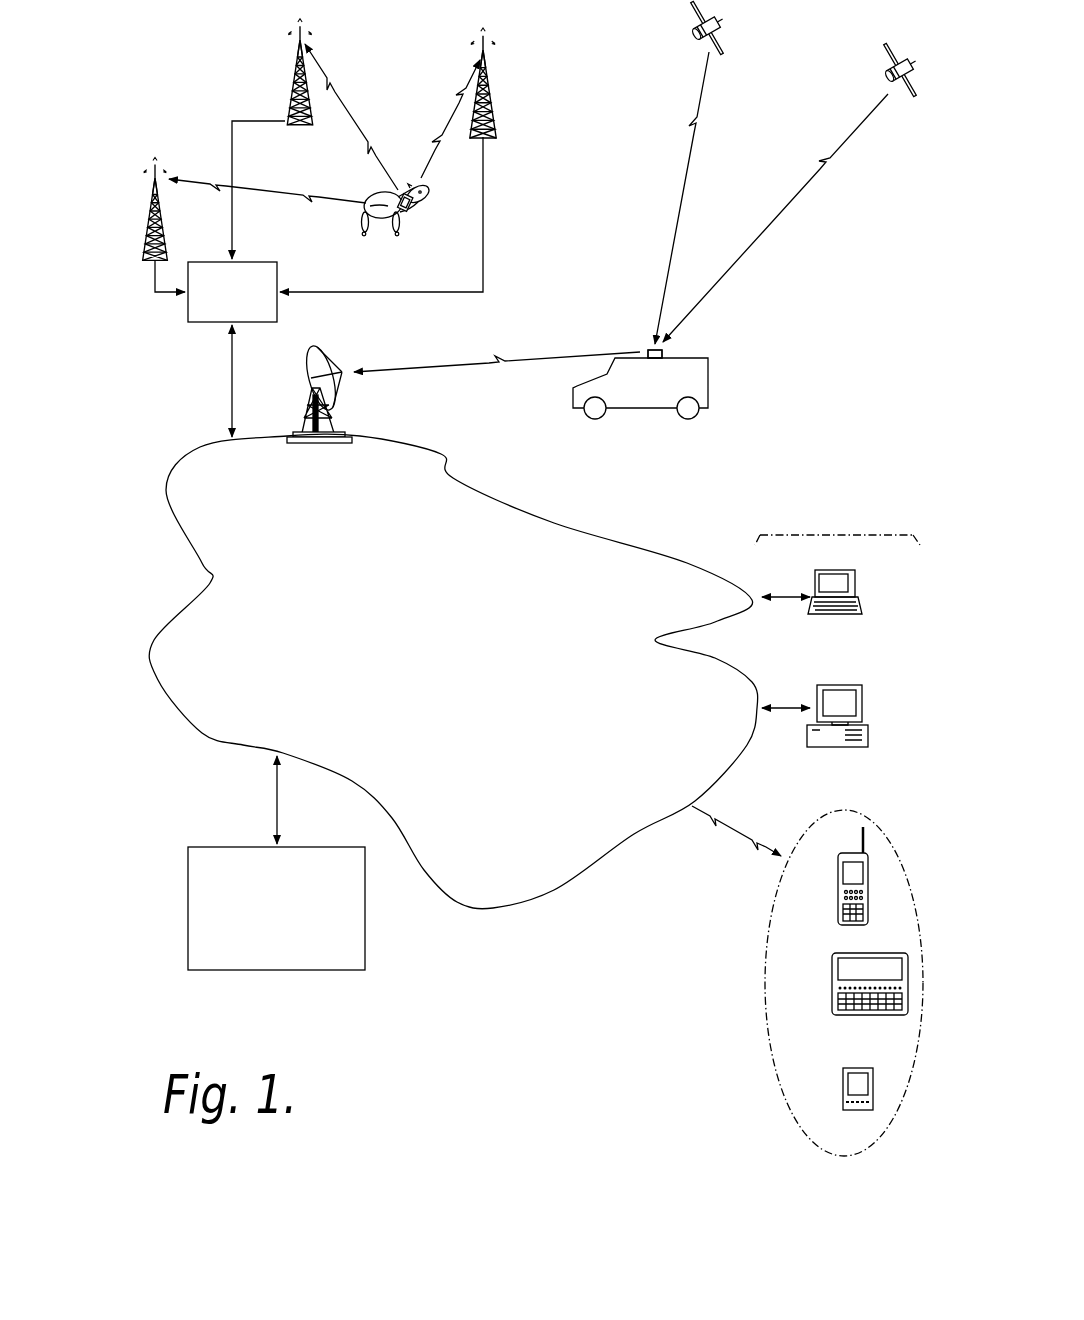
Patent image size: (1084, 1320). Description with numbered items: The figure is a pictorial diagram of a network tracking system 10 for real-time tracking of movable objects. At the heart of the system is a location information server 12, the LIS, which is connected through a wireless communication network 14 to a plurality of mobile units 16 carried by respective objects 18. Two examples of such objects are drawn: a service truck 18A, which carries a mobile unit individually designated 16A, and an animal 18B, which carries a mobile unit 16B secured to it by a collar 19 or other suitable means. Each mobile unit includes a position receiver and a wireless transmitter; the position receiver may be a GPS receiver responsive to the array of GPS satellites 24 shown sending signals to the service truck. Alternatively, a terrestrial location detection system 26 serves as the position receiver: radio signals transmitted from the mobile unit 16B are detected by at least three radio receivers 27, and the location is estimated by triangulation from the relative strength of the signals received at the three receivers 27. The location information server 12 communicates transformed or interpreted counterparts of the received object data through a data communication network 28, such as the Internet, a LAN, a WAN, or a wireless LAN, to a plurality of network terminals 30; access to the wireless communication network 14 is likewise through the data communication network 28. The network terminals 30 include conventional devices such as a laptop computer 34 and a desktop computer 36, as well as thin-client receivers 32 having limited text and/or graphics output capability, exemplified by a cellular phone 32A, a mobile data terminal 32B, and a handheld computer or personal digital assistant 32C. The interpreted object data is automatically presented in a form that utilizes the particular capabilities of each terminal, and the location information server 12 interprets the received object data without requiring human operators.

The network tracking system 10 is at (438, 1046).
The location information server 12 is at (276, 863).
The wireless communication network 14 is at (308, 357).
The mobile units 16 is at (421, 208).
The mobile unit on service truck 16A is at (663, 352).
The mobile unit on animal 16B is at (405, 214).
The objects 18 is at (671, 374).
The service truck 18A is at (640, 388).
The animal 18B is at (361, 235).
The collar 19 is at (401, 192).
The GPS satellites 24 is at (880, 66).
The terrestrial location detection system 26 is at (187, 323).
The radio receivers 27 is at (294, 80).
The data communication network 28 is at (453, 671).
The network terminals 30 is at (830, 533).
The thin-client receivers 32 is at (807, 973).
The cellular phone 32A is at (838, 926).
The mobile data terminal 32B is at (832, 1015).
The personal digital assistant 32C is at (845, 1068).
The laptop computer 34 is at (858, 603).
The desktop computer 36 is at (862, 706).